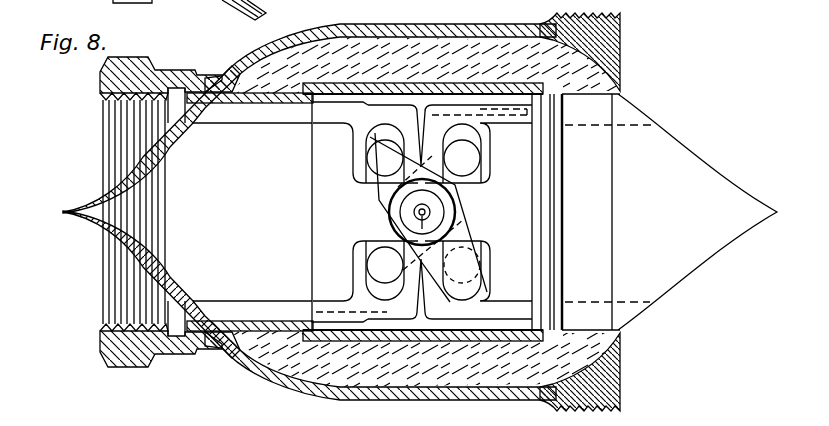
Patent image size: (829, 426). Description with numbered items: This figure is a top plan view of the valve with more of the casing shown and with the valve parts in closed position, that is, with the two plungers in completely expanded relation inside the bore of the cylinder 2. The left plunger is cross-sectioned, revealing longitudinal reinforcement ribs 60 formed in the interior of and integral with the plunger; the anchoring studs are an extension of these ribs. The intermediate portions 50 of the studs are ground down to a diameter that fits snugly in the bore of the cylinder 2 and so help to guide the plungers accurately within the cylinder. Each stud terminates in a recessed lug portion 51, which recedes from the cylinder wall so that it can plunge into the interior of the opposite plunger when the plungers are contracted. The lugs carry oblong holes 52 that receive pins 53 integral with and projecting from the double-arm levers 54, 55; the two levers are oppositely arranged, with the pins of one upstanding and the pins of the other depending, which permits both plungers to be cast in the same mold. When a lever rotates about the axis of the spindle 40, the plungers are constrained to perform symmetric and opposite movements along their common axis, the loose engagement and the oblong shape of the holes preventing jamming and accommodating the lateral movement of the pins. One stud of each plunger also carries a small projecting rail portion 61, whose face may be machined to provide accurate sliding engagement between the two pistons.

The cylinder 2 is at (358, 91).
The spindle 40 is at (411, 203).
The anchoring stud 50 is at (280, 212).
The recessed lug portion 51 is at (450, 212).
The oblong hole 52 is at (368, 138).
The pin 53 is at (423, 212).
The lever 54 is at (380, 190).
The lever 55 is at (468, 189).
The longitudinal reinforcement rib 60 is at (264, 212).
The projecting rail portion 61 is at (473, 113).